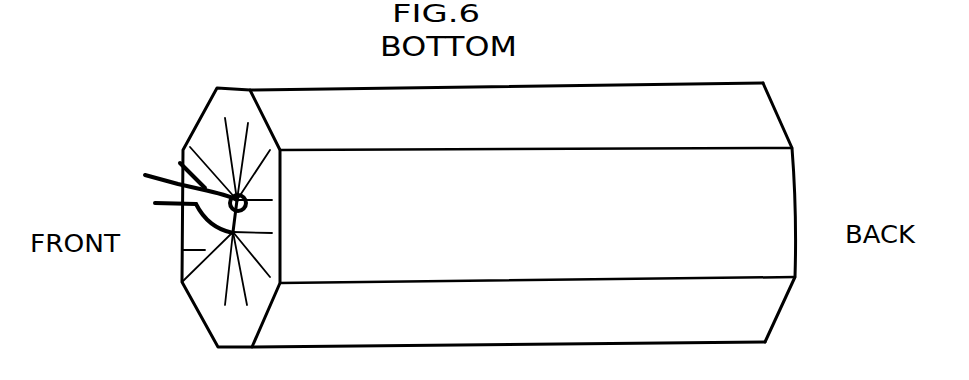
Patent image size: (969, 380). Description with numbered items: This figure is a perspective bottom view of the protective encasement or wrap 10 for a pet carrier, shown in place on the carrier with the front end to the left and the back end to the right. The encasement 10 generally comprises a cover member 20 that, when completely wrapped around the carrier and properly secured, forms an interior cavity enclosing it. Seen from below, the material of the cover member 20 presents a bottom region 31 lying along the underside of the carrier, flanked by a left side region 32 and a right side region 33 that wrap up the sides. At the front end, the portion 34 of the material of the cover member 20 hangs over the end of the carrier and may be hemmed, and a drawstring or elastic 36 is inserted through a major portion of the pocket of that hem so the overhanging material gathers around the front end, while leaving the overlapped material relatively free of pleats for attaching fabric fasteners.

The protective encasement or wrap 10 is at (318, 69).
The cover member 20 is at (648, 108).
The bottom region 31 is at (537, 237).
The left side region 32 is at (508, 324).
The right side region 33 is at (521, 116).
The portion hanging over the front end 34 is at (227, 225).
The drawstring, elastic 36 is at (172, 205).